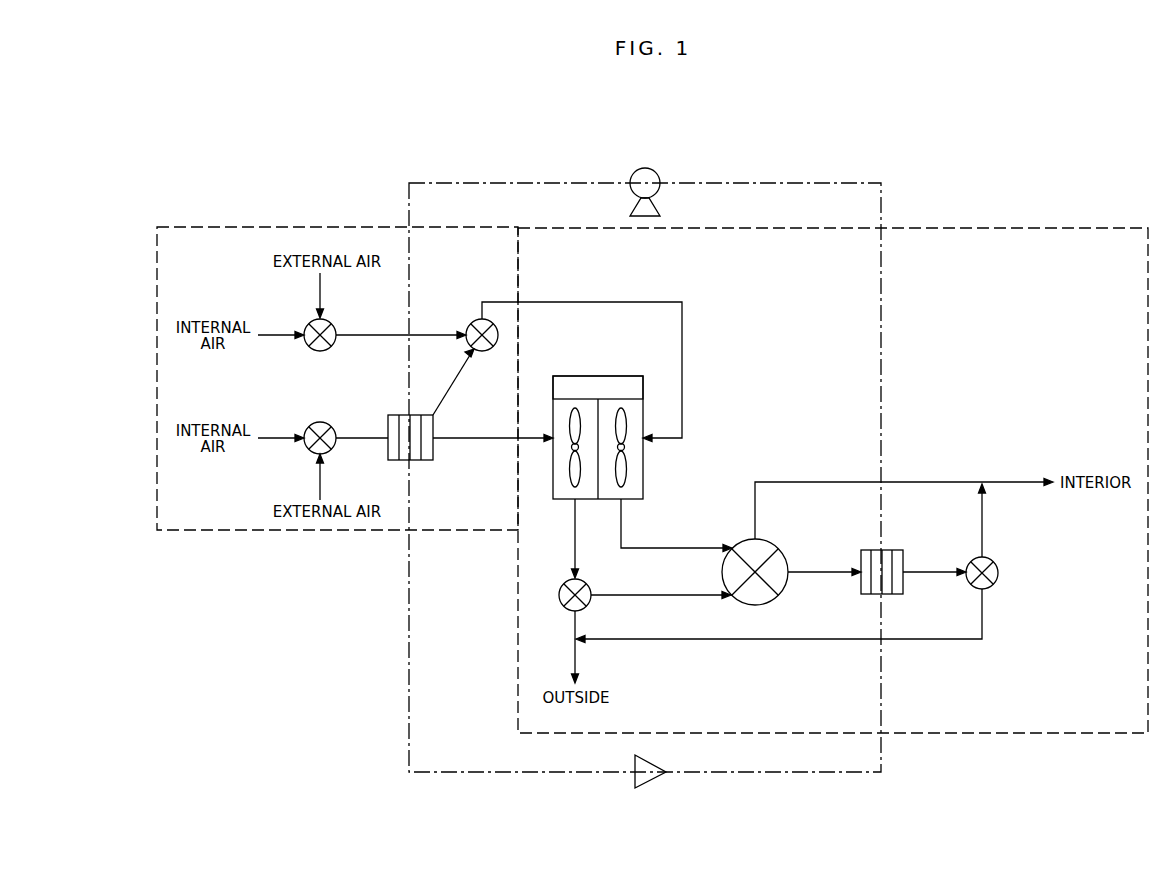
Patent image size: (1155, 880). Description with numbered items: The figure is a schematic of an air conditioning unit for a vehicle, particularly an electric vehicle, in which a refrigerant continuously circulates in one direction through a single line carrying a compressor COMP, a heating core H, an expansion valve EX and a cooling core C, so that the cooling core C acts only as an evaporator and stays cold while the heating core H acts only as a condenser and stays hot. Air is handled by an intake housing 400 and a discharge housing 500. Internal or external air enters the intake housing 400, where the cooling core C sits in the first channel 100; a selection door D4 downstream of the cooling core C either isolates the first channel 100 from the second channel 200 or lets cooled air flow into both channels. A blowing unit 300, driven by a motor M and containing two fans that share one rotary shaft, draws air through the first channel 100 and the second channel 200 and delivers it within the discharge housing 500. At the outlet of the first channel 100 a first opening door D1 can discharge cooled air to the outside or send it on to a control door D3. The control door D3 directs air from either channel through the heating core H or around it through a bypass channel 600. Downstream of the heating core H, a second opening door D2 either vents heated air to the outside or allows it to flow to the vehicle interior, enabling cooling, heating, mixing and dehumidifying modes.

The first channel 100 is at (495, 440).
The second channel 200 is at (655, 302).
The blowing unit 300 is at (650, 437).
The intake housing 400 is at (258, 530).
The discharge housing 500 is at (1052, 733).
The bypass channel 600 is at (945, 482).
The compressor COMP is at (652, 170).
The expansion valve EX is at (655, 783).
The cooling core C is at (414, 447).
The heating core H is at (889, 578).
The blower motor M is at (598, 388).
The first opening door D1 is at (585, 602).
The second opening door D2 is at (991, 582).
The control door D3 is at (755, 564).
The selection door D4 is at (487, 344).